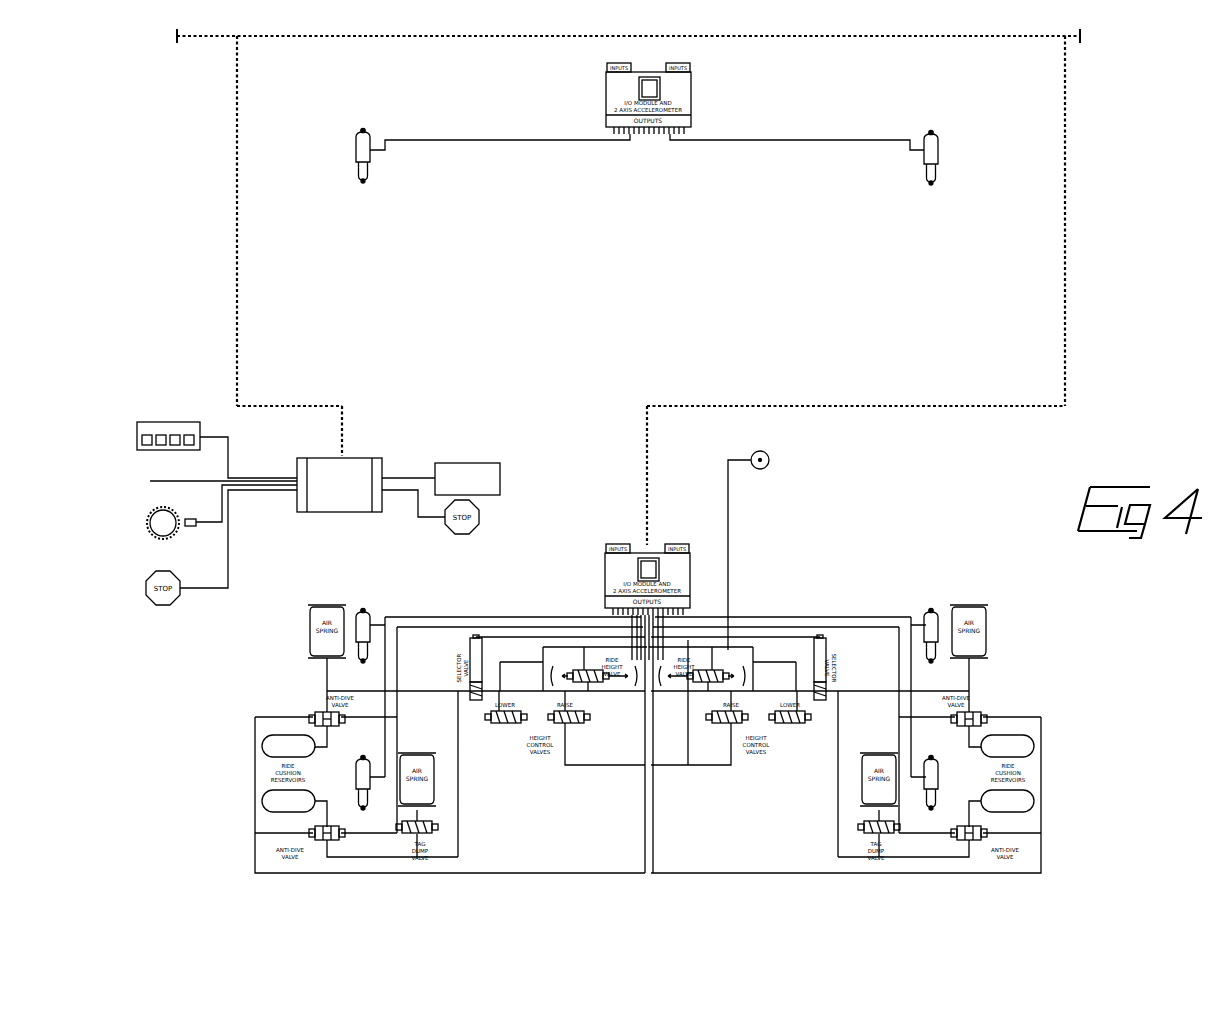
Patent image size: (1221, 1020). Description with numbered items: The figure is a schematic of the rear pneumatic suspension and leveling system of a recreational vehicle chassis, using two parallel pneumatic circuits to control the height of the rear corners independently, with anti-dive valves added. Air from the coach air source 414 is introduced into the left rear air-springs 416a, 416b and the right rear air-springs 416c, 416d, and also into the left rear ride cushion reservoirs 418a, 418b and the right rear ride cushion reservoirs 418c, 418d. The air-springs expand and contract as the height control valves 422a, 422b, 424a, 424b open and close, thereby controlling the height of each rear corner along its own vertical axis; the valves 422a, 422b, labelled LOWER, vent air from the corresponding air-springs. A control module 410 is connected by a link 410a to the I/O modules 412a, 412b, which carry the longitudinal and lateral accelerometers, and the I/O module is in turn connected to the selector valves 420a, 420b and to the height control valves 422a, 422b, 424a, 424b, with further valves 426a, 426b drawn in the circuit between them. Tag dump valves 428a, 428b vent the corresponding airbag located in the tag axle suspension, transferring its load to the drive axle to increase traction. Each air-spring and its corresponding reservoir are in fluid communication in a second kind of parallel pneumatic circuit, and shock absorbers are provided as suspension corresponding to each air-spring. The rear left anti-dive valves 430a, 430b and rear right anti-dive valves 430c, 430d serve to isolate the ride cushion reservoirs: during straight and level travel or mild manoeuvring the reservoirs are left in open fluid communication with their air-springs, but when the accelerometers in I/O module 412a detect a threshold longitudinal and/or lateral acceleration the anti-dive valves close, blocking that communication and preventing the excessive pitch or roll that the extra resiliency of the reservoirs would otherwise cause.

The control module 410 is at (362, 506).
The communication link between control module and I/O modules 410a is at (345, 412).
The I/O module 412a is at (615, 565).
The I/O module and X, Y axis accelerometers 412b is at (612, 92).
The coach air source 414 is at (770, 461).
The left rear air-spring 416a is at (312, 642).
The left rear air-spring 416b is at (418, 795).
The right rear air-spring 416c is at (975, 622).
The right rear air-spring 416d is at (868, 795).
The left rear ride cushion reservoir 418a is at (278, 748).
The left rear ride cushion reservoir 418b is at (280, 803).
The right rear ride cushion reservoir 418c is at (1020, 745).
The right rear ride cushion reservoir 418d is at (1020, 800).
The selector valve 420a is at (478, 660).
The selector valve 420b is at (822, 655).
The height control valve (LOWER) 422a is at (505, 725).
The height control valve (LOWER) 422b is at (820, 775).
The height control valve 424a is at (578, 725).
The height control valve 424b is at (718, 725).
The ride height valve 426a is at (582, 668).
The ride height valve 426b is at (718, 668).
The tag dump valve 428a is at (435, 832).
The tag dump valve 428b is at (865, 835).
The rear left anti-dive valve 430a is at (322, 718).
The rear left anti-dive valve 430b is at (317, 833).
The rear right anti-dive valve 430c is at (968, 717).
The rear right anti-dive valve 430d is at (985, 836).